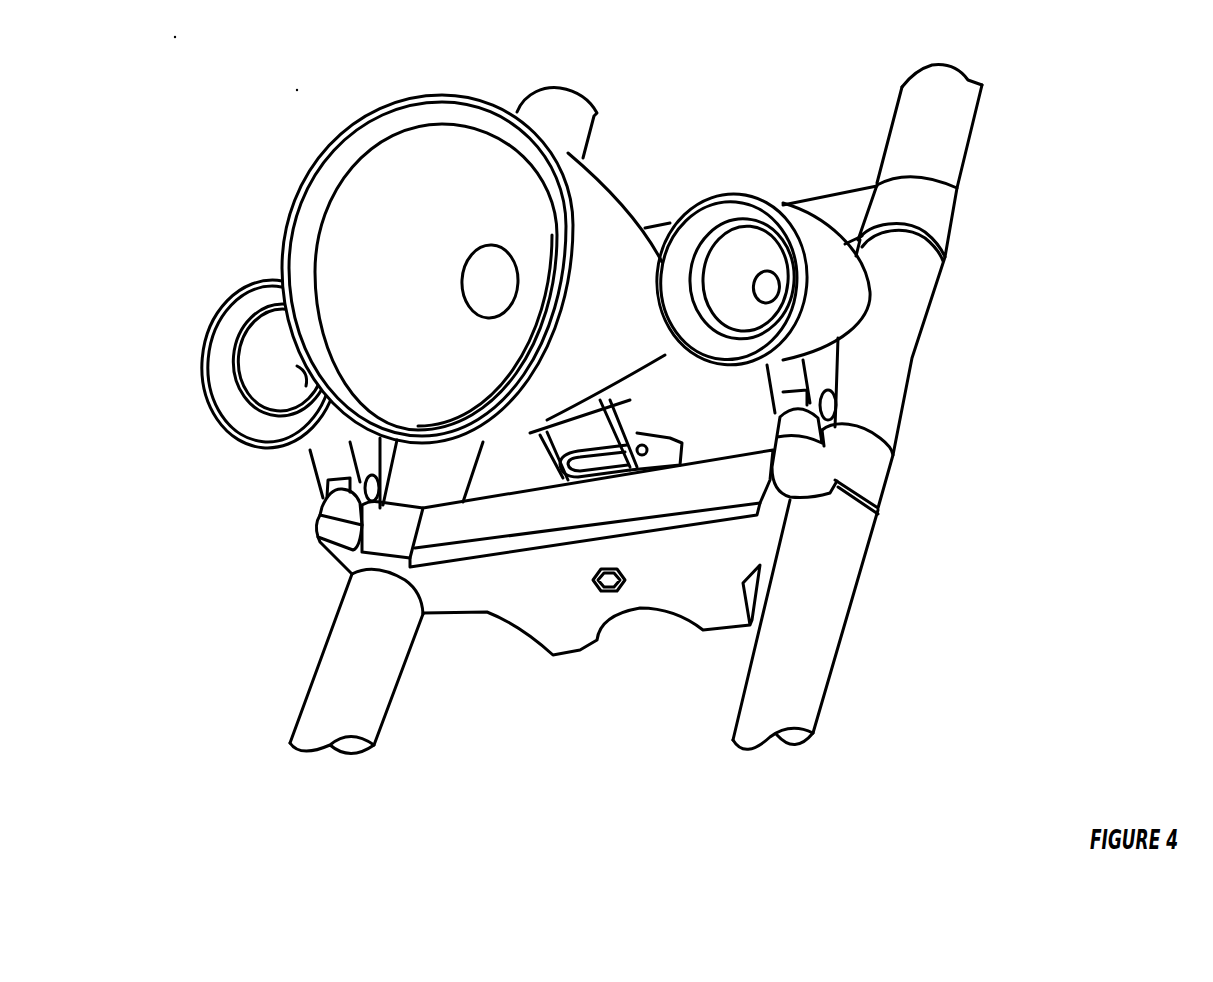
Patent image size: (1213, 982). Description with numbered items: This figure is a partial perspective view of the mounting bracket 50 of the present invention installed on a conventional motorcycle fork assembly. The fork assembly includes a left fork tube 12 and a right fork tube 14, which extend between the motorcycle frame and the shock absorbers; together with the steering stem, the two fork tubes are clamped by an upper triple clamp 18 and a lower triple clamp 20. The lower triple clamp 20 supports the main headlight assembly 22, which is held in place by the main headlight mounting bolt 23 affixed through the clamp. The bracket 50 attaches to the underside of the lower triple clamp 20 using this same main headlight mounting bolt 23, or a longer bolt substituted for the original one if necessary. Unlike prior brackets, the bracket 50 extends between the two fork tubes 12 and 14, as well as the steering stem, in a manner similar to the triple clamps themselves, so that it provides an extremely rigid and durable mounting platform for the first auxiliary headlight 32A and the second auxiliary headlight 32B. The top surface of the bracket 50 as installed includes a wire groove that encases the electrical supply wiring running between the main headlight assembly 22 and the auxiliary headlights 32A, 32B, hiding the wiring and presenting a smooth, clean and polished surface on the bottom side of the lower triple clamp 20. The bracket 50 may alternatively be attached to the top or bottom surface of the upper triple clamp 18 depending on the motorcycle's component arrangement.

The left fork tube 12 is at (955, 130).
The right fork tube 14 is at (583, 128).
The upper triple clamp 18 is at (928, 207).
The lower triple clamp 20 is at (870, 460).
The main headlight assembly 22 is at (603, 222).
The main headlight mounting bolt 23 is at (597, 606).
The first auxiliary headlight 32A is at (833, 314).
The second auxiliary headlight 32B is at (262, 285).
The mounting bracket 50 is at (498, 590).